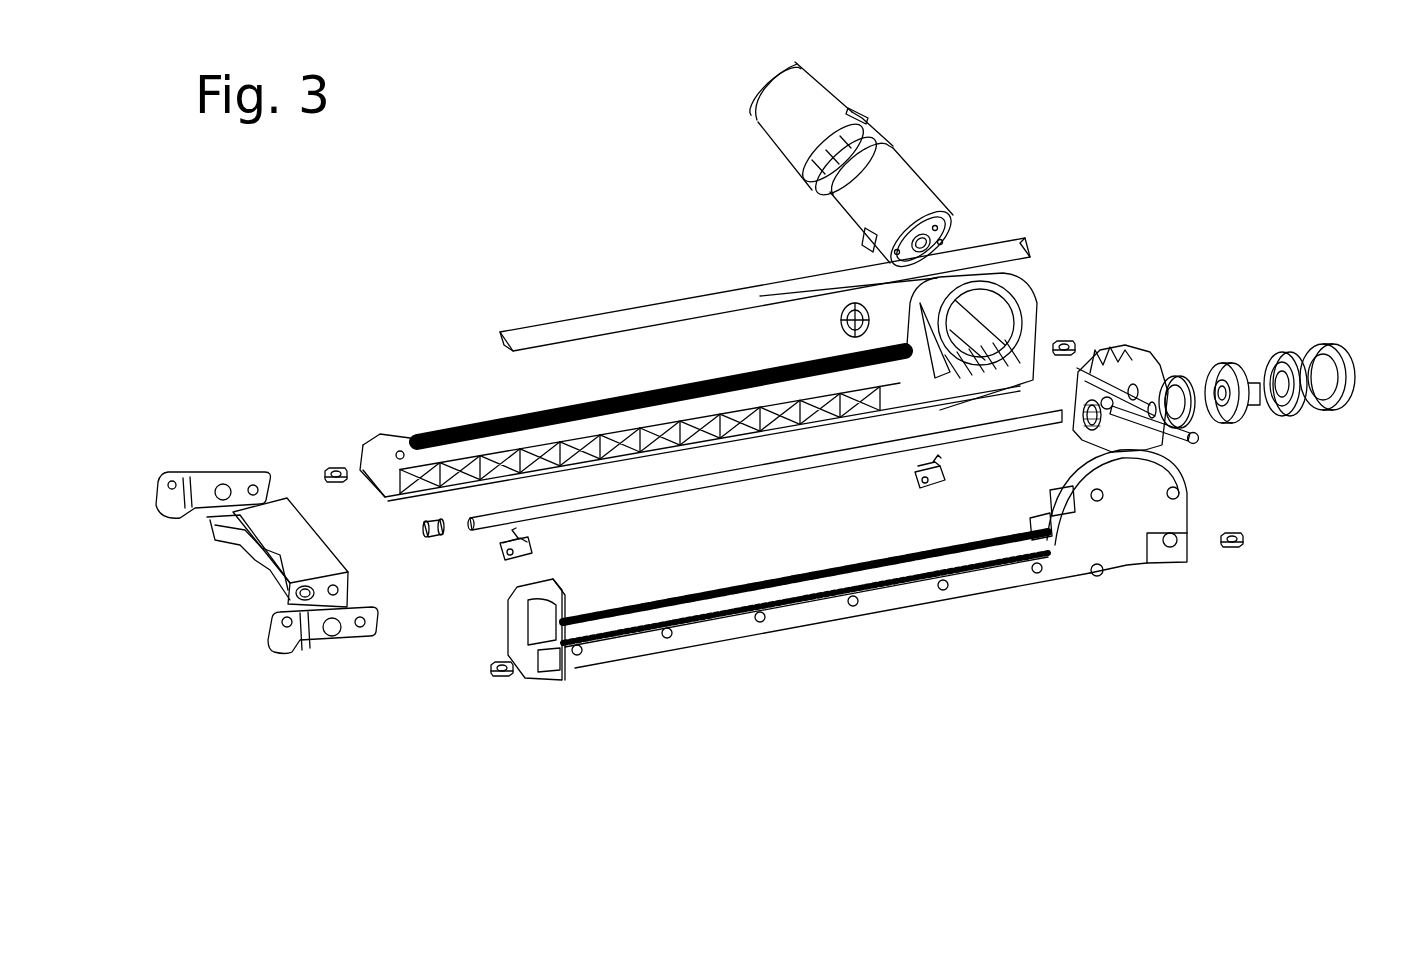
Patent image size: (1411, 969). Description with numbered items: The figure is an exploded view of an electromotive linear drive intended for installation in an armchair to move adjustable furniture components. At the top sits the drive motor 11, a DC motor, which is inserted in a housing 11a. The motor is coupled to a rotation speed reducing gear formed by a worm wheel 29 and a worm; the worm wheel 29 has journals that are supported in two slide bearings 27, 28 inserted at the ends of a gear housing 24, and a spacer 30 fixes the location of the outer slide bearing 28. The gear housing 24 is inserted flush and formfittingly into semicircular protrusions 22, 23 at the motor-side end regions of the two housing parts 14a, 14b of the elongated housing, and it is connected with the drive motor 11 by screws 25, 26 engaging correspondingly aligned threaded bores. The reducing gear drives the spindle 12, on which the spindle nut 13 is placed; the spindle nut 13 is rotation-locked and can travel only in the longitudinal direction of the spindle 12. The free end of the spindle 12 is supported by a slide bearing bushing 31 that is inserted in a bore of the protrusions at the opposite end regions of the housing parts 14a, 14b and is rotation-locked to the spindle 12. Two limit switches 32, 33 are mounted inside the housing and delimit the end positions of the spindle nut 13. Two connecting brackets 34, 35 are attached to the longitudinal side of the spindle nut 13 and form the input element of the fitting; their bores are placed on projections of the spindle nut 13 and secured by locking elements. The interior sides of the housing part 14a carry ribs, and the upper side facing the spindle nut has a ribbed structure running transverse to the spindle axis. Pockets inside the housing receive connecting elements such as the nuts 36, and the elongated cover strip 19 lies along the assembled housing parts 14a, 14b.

The drive motor 11 is at (897, 188).
The housing 11a is at (797, 127).
The spindle 12 is at (650, 495).
The spindle nut 13 is at (285, 540).
The housing part 14a is at (905, 597).
The housing part 14b is at (477, 448).
The cover strip 19 is at (662, 317).
The protrusion 22 is at (1140, 458).
The protrusion 23 is at (993, 288).
The gear housing 24 is at (1135, 372).
The screw 25 is at (380, 448).
The screw 26 is at (1088, 442).
The slide bearing 27 is at (1183, 378).
The slide bearing 28 is at (1290, 360).
The worm wheel 29 is at (1232, 365).
The spacer 30 is at (1330, 350).
The slide bearing bushing 31 is at (430, 538).
The limit switch 32 is at (918, 483).
The limit switch 33 is at (500, 556).
The connecting bracket 34 is at (290, 638).
The connecting bracket 35 is at (185, 475).
The nut 36 is at (1066, 338).